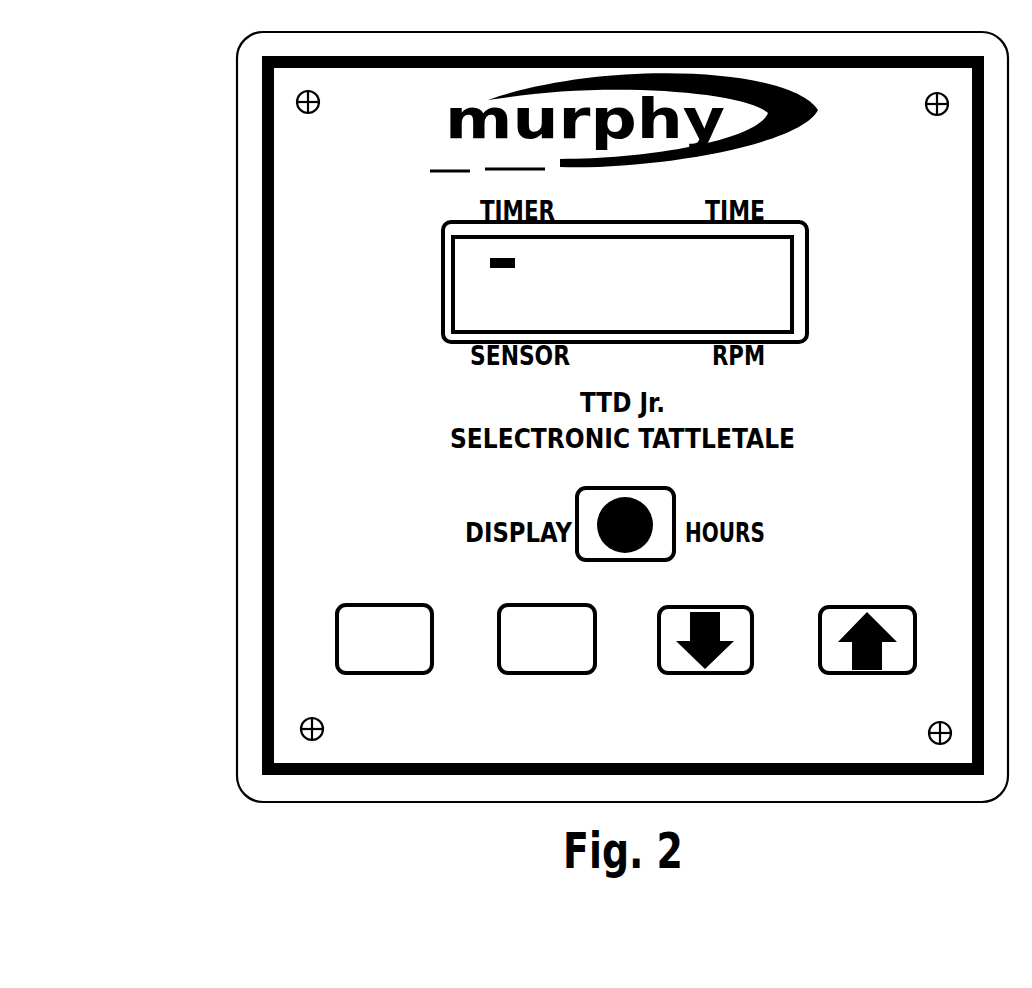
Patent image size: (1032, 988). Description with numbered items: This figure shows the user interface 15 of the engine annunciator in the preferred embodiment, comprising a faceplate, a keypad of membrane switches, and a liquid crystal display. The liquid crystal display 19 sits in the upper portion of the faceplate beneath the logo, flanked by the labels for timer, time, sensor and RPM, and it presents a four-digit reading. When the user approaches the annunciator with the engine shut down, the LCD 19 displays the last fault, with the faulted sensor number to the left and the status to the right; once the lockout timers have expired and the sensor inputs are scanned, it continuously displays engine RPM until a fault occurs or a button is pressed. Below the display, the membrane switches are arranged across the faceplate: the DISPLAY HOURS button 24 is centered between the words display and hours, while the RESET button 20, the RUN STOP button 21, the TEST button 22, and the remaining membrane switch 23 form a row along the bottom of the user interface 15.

The user interface 15 is at (237, 197).
The liquid crystal display 19 is at (674, 282).
The RESET button 20 is at (357, 609).
The RUN STOP button 21 is at (529, 674).
The TEST button 22 is at (681, 675).
The membrane switch 23 is at (873, 626).
The DISPLAY HOURS button 24 is at (668, 506).